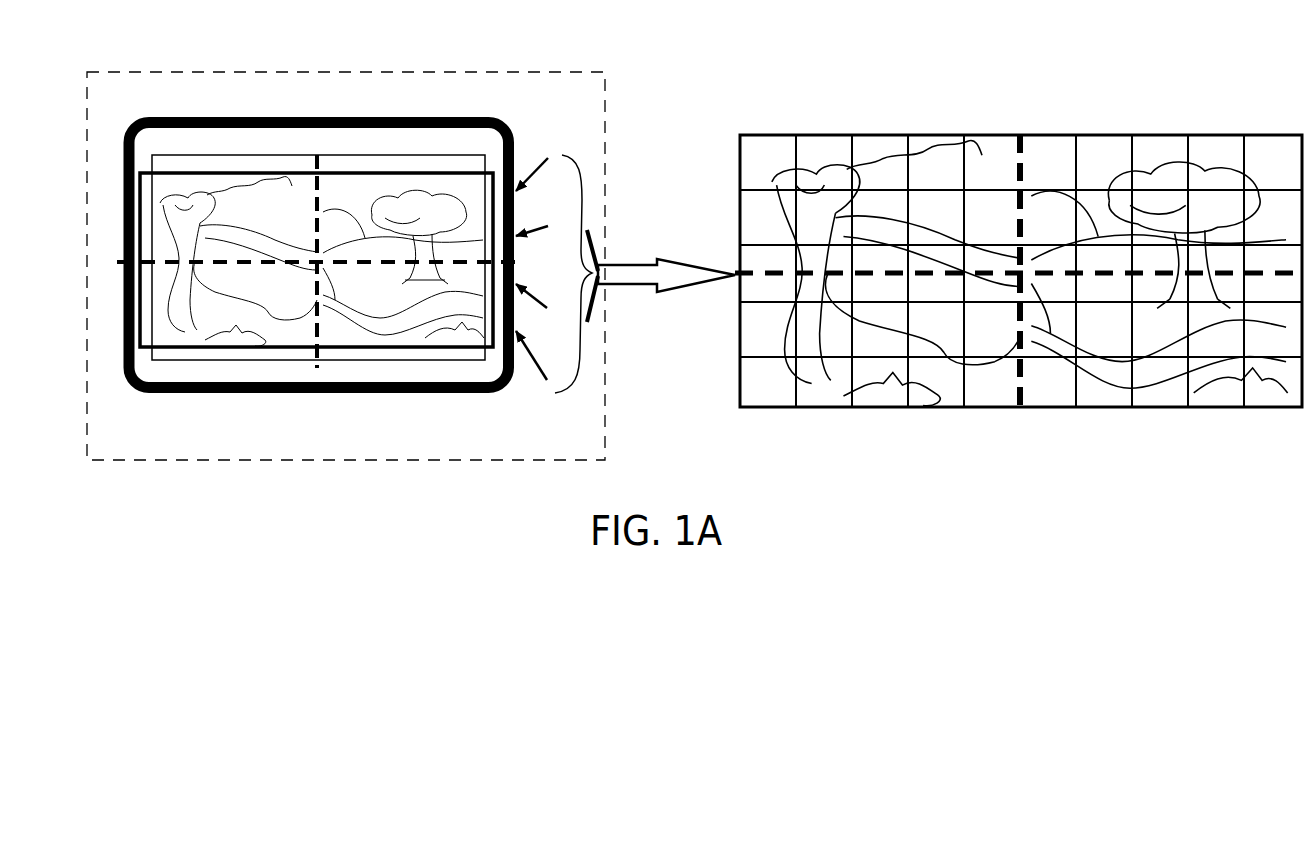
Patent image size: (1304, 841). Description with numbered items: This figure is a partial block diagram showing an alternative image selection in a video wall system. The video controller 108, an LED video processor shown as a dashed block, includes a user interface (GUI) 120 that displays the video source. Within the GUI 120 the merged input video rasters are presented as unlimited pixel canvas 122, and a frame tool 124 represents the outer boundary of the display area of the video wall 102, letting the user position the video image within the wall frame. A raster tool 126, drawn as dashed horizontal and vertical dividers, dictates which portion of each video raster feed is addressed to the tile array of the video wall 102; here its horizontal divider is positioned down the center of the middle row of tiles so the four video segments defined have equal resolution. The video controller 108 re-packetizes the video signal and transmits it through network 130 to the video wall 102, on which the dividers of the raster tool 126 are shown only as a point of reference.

The video wall 102 is at (1060, 134).
The video controller 108 is at (482, 72).
The user interface (GUI) 120 is at (195, 392).
The unlimited pixel canvas 122 is at (185, 153).
The frame tool 124 is at (408, 173).
The raster tool 126 is at (315, 240).
The network 130 is at (645, 287).